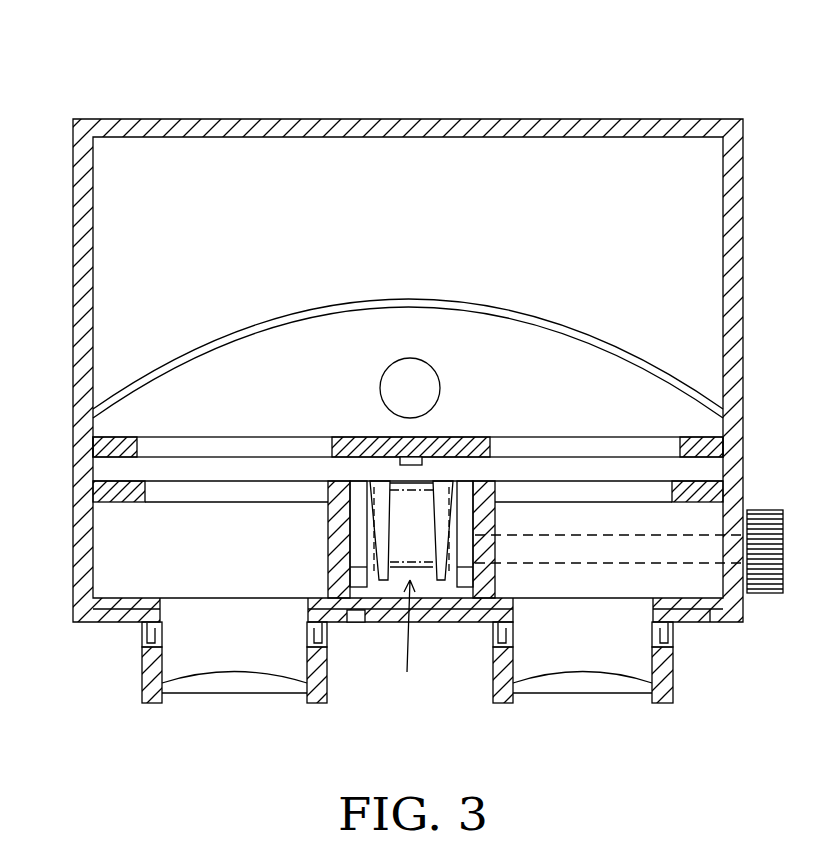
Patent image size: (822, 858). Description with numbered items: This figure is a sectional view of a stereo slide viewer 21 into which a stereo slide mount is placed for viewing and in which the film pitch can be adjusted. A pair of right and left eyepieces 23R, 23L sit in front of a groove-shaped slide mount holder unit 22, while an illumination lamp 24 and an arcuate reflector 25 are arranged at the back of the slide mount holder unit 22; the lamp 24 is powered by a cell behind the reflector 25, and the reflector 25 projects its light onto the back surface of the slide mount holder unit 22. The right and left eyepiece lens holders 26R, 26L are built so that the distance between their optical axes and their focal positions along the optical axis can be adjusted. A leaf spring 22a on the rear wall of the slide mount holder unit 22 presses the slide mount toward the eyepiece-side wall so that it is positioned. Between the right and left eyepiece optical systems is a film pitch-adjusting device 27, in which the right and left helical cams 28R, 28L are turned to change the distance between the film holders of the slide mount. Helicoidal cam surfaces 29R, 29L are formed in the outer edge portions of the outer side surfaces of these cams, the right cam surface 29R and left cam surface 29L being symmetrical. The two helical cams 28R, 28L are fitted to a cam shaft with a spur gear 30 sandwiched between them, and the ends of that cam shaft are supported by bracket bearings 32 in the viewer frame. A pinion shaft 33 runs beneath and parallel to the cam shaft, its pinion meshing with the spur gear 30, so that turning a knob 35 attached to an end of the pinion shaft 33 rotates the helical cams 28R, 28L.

The stereo slide viewer 21 is at (257, 97).
The slide mount holder unit 22 is at (115, 477).
The leaf spring 22a is at (418, 473).
The left eyepiece 23L is at (228, 695).
The right eyepiece 23R is at (592, 695).
The illumination lamp 24 is at (428, 366).
The arcuate reflector 25 is at (245, 335).
The left eyepiece lens holder 26L is at (142, 660).
The right eyepiece lens holder 26R is at (673, 665).
The film pitch-adjusting device 27 is at (413, 643).
The left helical cam 28L is at (382, 586).
The right helical cam 28R is at (446, 562).
The left helicoidal cam surface 29L is at (378, 500).
The right helicoidal cam surface 29R is at (450, 505).
The spur gear 30 is at (417, 549).
The bracket bearing 32 is at (357, 538).
The pinion shaft 33 is at (608, 566).
The knob 35 is at (767, 500).